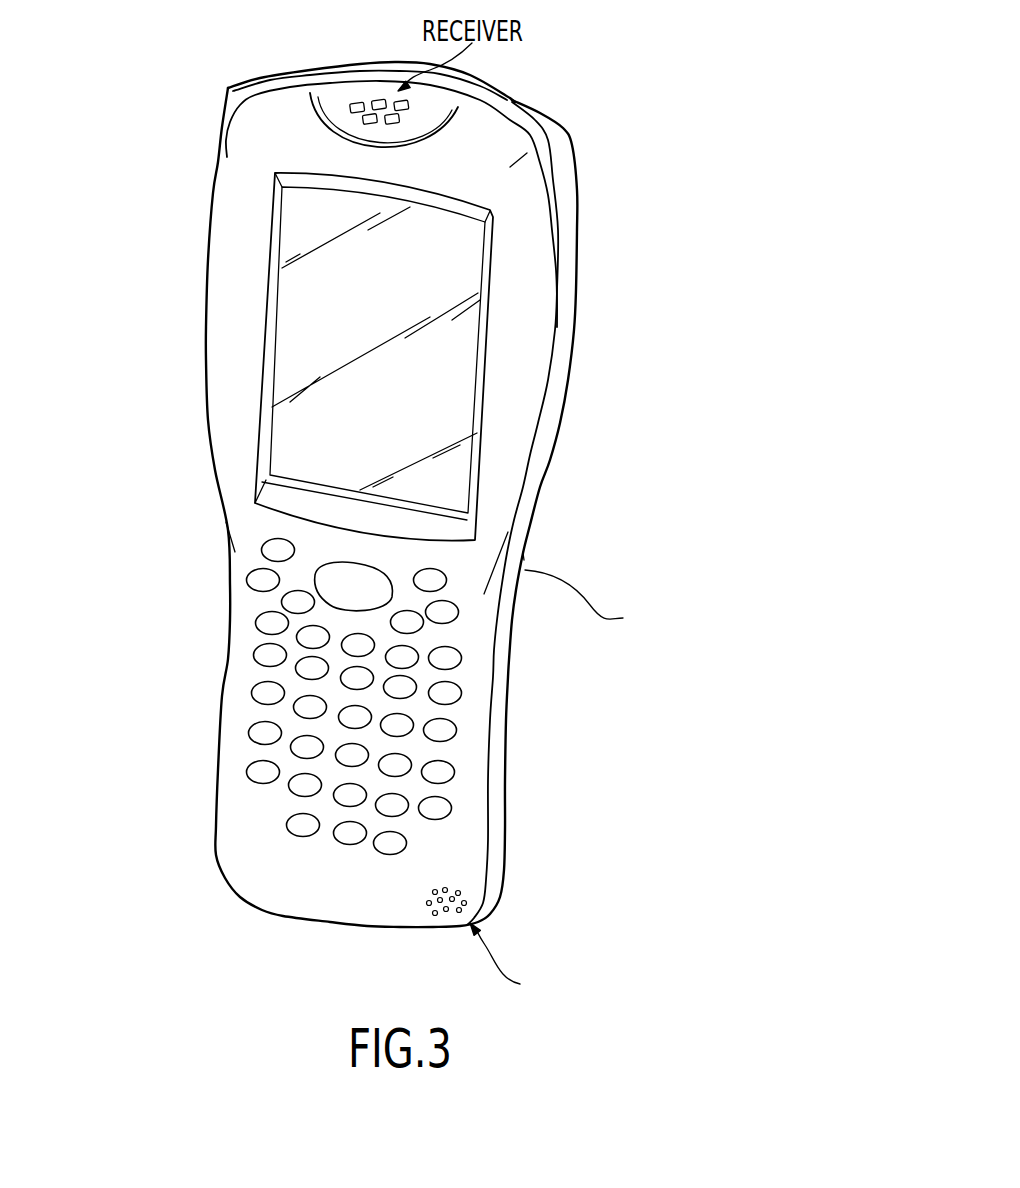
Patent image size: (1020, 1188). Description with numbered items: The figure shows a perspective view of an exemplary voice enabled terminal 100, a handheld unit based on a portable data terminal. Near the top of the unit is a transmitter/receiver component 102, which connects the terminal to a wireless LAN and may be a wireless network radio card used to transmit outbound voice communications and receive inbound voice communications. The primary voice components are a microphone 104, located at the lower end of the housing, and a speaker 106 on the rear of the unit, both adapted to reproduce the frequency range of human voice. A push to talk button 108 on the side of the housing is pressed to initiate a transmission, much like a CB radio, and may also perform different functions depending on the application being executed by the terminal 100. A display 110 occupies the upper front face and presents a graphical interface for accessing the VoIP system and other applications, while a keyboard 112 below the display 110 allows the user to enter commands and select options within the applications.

The voice enabled terminal 100 is at (637, 284).
The transmitter/receiver component 102 is at (540, 118).
The microphone 104 is at (447, 916).
The speaker 106 is at (528, 562).
The push to talk button 108 is at (226, 96).
The display 110 is at (288, 337).
The keyboard 112 is at (222, 697).